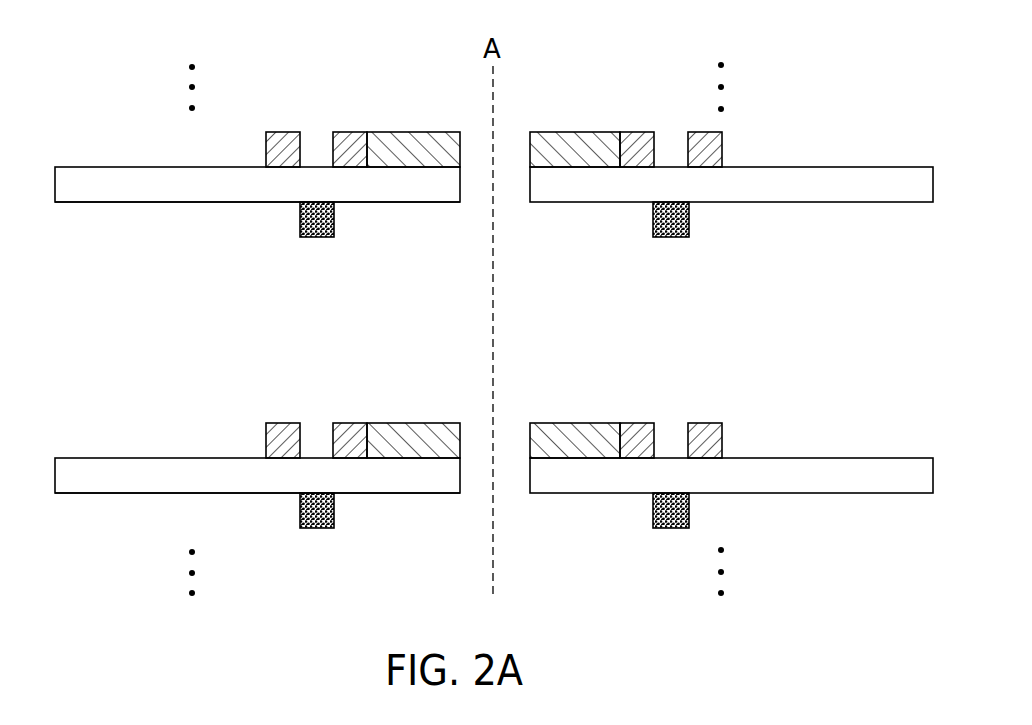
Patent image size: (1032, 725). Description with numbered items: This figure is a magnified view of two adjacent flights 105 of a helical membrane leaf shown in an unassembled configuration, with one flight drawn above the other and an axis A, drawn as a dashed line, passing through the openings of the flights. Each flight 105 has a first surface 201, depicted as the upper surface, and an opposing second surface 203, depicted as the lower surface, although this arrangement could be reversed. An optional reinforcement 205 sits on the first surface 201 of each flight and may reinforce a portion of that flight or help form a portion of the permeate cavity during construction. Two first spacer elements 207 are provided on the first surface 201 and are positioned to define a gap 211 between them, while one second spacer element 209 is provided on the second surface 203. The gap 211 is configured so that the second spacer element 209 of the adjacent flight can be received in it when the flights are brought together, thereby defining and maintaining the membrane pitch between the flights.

The flight 105 is at (58, 530).
The first surface 201 is at (180, 458).
The second surface 203 is at (252, 535).
The reinforcement 205 is at (420, 424).
The first spacer element 207 is at (348, 424).
The second spacer element 209 is at (320, 237).
The gap 211 is at (312, 440).